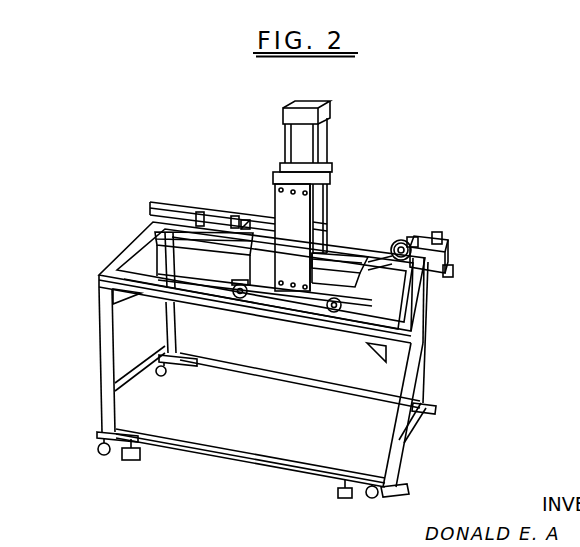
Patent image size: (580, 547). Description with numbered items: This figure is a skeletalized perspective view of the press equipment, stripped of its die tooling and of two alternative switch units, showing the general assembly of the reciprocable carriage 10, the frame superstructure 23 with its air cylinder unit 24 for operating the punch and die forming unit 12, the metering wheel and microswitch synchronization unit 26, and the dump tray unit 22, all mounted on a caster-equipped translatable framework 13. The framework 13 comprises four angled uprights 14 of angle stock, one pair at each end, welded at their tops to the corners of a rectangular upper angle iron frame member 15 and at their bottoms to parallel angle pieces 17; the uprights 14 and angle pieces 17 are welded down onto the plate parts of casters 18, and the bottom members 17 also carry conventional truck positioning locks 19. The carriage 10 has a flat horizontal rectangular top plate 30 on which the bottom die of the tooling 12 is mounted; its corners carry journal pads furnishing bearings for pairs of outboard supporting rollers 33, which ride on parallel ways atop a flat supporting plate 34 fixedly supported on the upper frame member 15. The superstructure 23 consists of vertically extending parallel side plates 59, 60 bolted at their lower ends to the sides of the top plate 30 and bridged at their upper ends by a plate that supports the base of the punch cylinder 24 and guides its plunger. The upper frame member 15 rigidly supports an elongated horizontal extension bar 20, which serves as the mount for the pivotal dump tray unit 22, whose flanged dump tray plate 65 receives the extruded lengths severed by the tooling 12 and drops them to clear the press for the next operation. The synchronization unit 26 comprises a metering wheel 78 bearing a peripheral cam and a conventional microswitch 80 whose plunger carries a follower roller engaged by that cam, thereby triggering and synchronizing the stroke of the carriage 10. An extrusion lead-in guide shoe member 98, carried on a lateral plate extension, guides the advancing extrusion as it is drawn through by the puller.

The reciprocable carriage 10 is at (268, 289).
The punch and die forming unit 12 is at (338, 190).
The translatable framework 13 is at (100, 390).
The angled uprights 14 is at (102, 345).
The rectangular upper angle iron frame member 15 is at (132, 302).
The parallel angle pieces 17 is at (338, 399).
The casters 18 is at (104, 455).
The truck positioning locks 19 is at (139, 458).
The horizontal extension bar 20 is at (163, 199).
The dump tray unit 22 is at (208, 236).
The carriage superstructure 23 is at (291, 227).
The air cylinder unit 24 is at (333, 142).
The metering wheel and microswitch synchronization unit 26 is at (433, 237).
The carriage top plate 30 is at (352, 264).
The supporting rollers 33 is at (265, 283).
The supporting plate 34 is at (213, 283).
The side plate 59 is at (303, 235).
The side plate 60 is at (320, 216).
The flanged dump tray plate 65 is at (217, 243).
The metering wheel 78 is at (414, 234).
The microswitch 80 is at (444, 241).
The extrusion lead-in guide shoe member 98 is at (452, 277).